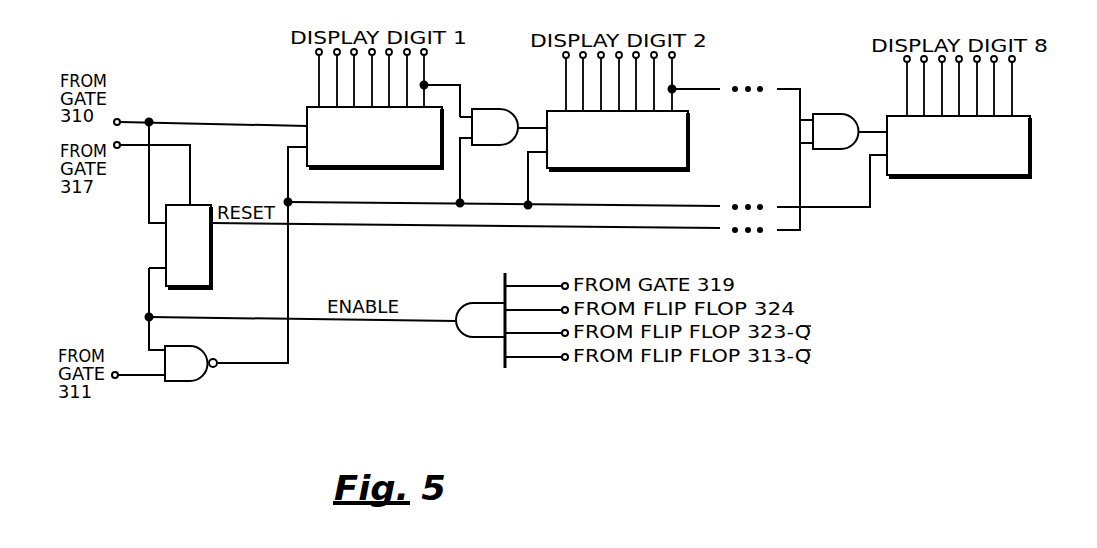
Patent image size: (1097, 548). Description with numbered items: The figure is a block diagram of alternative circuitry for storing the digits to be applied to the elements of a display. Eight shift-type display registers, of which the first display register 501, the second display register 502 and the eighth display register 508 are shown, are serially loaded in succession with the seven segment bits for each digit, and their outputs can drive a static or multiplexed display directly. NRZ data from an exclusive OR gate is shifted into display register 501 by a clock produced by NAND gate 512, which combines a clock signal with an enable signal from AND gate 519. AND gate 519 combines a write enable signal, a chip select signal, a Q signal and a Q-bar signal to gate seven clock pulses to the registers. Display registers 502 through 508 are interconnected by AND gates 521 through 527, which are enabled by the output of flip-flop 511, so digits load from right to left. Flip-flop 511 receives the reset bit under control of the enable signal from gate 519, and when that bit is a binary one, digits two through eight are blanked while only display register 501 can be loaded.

The display register 501 is at (372, 168).
The display register 502 is at (688, 138).
The display register 508 is at (1030, 142).
The flip-flop 511 is at (211, 268).
The NAND gate 512 is at (186, 346).
The AND gate 519 is at (476, 350).
The AND gate 521 is at (493, 109).
The AND gate 527 is at (833, 114).